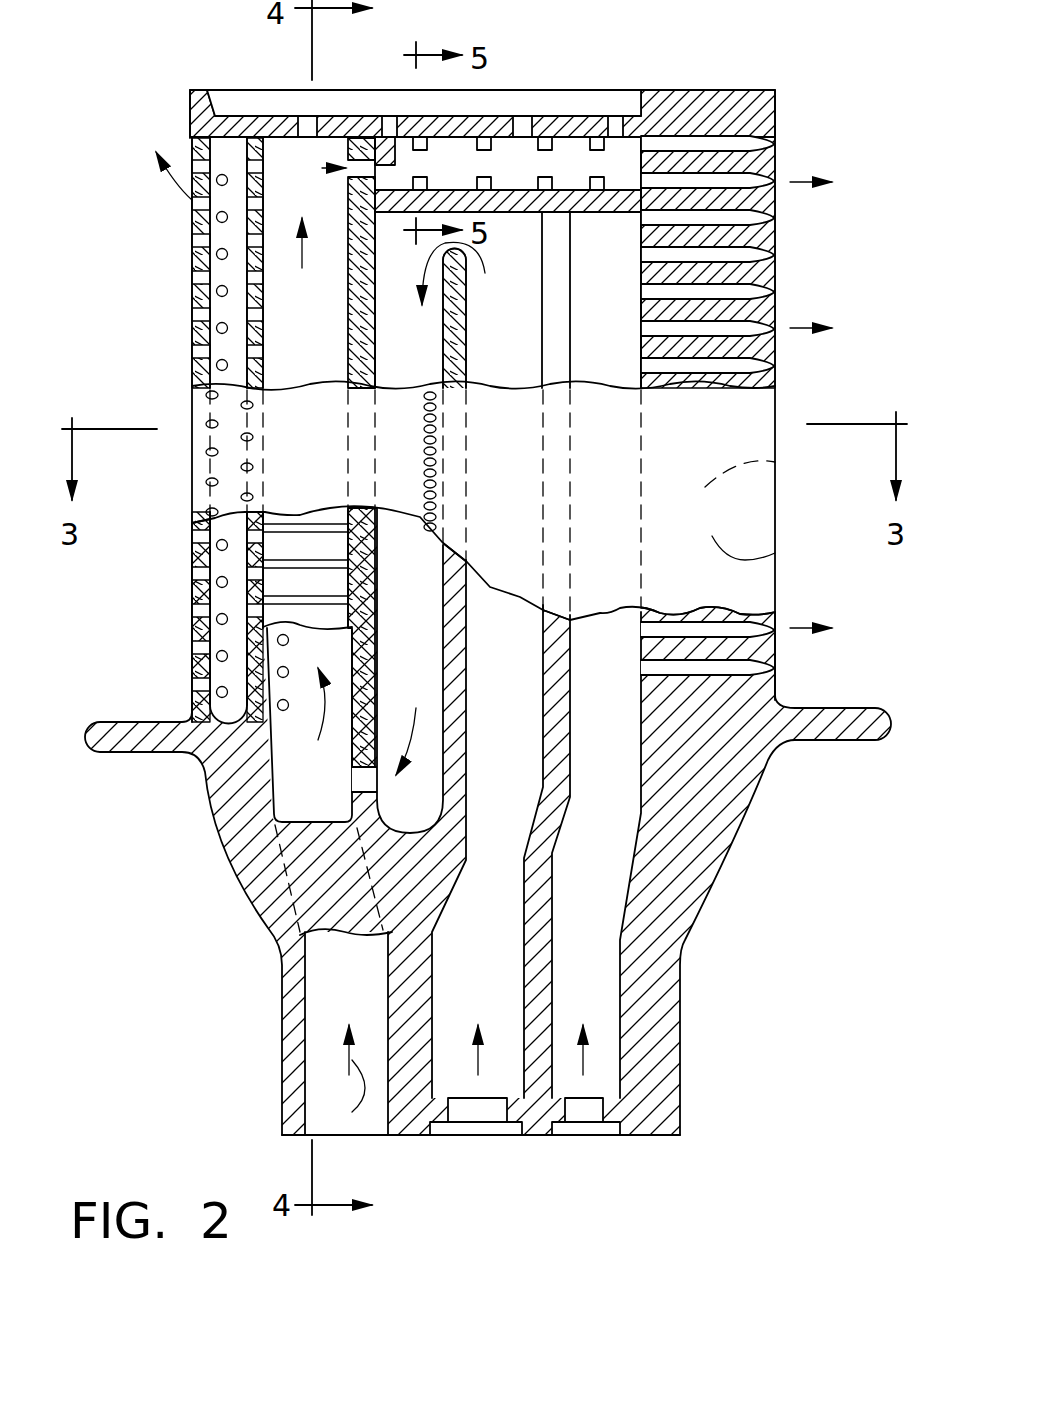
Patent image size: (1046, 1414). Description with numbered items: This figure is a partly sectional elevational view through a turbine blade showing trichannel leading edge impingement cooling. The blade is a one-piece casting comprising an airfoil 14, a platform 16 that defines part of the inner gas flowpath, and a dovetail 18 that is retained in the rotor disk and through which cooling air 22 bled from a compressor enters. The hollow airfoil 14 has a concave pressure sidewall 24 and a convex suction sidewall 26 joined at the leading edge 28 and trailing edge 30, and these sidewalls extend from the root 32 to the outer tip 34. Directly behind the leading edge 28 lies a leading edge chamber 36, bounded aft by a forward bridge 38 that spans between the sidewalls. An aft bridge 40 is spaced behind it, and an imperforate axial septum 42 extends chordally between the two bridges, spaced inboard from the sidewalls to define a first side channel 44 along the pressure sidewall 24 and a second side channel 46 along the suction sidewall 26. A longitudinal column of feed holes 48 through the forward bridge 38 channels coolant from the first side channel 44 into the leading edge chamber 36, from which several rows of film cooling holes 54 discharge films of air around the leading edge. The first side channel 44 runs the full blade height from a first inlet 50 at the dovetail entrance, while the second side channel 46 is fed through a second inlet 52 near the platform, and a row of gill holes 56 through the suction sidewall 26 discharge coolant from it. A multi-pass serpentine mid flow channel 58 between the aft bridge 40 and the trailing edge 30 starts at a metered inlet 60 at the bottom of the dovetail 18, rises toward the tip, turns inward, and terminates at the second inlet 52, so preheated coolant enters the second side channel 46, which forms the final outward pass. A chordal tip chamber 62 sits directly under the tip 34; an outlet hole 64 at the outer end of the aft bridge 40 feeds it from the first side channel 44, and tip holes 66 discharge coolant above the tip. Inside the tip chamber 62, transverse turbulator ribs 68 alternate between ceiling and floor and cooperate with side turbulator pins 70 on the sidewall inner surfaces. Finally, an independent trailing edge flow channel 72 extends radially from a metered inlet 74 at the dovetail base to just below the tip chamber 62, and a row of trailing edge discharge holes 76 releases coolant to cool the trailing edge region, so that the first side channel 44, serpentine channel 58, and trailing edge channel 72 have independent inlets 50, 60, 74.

The airfoil 14 is at (190, 406).
The platform 16 is at (853, 708).
The dovetail 18 is at (690, 1005).
The air 22 is at (341, 1092).
The pressure sidewall 24 is at (775, 553).
The suction sidewall 26 is at (775, 462).
The leading edge 28 is at (192, 264).
The trailing edge 30 is at (777, 236).
The root 32 is at (192, 718).
The tip 34 is at (645, 95).
The leading edge chamber 36 is at (228, 640).
The forward bridge 38 is at (263, 286).
The aft bridge 40 is at (348, 346).
The axial septum 42 is at (312, 590).
The first side channel 44 is at (320, 227).
The second side channel 46 is at (307, 722).
The feed holes 48 is at (262, 178).
The first inlet 50 is at (346, 1032).
The second inlet 52 is at (372, 792).
The film cooling holes 54 is at (206, 455).
The gill holes 56 is at (288, 702).
The serpentine mid flow channel 58 is at (459, 655).
The metered inlet 60 is at (460, 1112).
The tip chamber 62 is at (508, 174).
The outlet hole 64 is at (393, 160).
The tip holes 66 is at (523, 128).
The turbulator ribs 68 is at (560, 150).
The side turbulator pins 70 is at (540, 180).
The trailing edge flow channel 72 is at (596, 655).
The metered inlet 74 is at (573, 1112).
The trailing edge discharge holes 76 is at (768, 258).